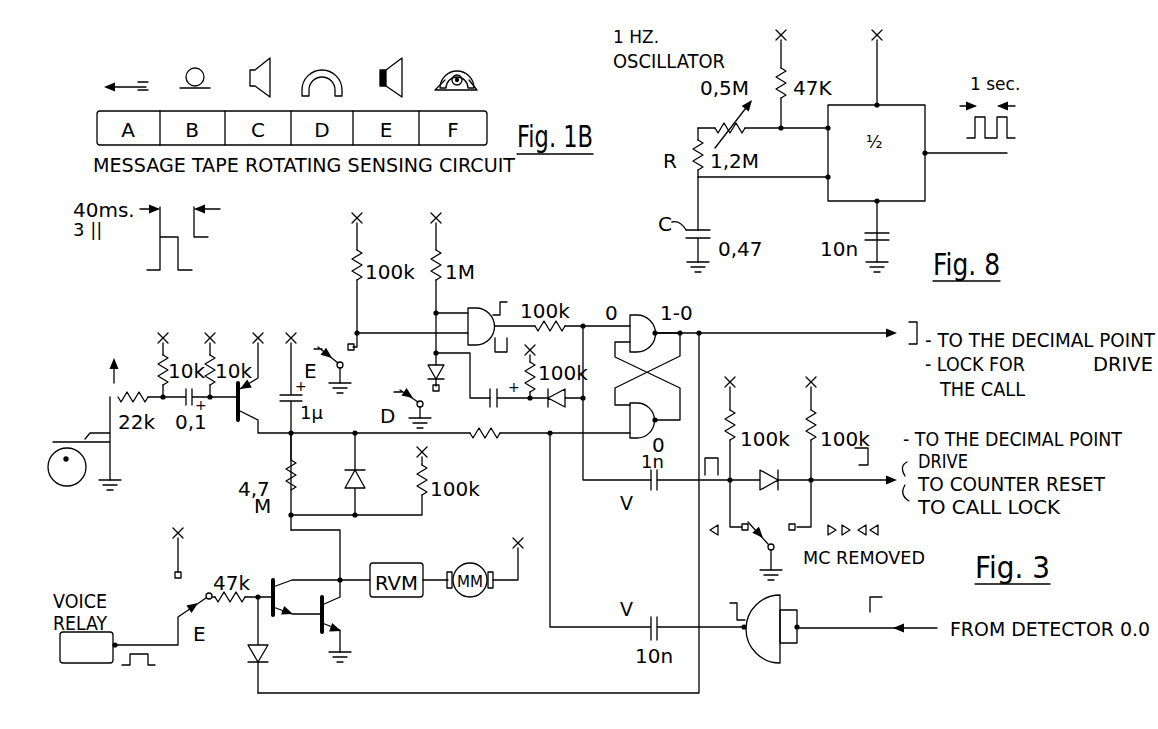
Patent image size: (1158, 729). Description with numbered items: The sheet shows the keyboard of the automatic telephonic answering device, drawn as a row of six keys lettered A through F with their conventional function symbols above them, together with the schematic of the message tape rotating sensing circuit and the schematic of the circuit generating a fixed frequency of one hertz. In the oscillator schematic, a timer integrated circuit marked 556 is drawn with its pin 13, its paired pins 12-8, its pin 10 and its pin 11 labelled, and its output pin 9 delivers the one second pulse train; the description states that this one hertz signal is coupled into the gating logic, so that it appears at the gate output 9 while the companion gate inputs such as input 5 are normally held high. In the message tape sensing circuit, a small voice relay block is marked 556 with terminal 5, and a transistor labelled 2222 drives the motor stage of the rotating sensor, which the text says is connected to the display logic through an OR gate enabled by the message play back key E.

In FIG. 8, the 556 dual timer IC 556 is at (876, 153).
In FIG. 3, the 556 dual timer IC 556 is at (86, 647).
In FIG. 8, the IC pin 13 is at (845, 135).
In FIG. 8, the IC pins 12 and 8 12-8 is at (850, 185).
In FIG. 8, the IC pin 10 is at (878, 79).
In FIG. 8, the IC pin 11 is at (879, 226).
In FIG. 8, the output of the gate F 9 is at (955, 155).
In FIG. 3, the input of the gate F 5 is at (105, 658).
In FIG. 3, the 2N2222 transistor 2222 is at (361, 621).